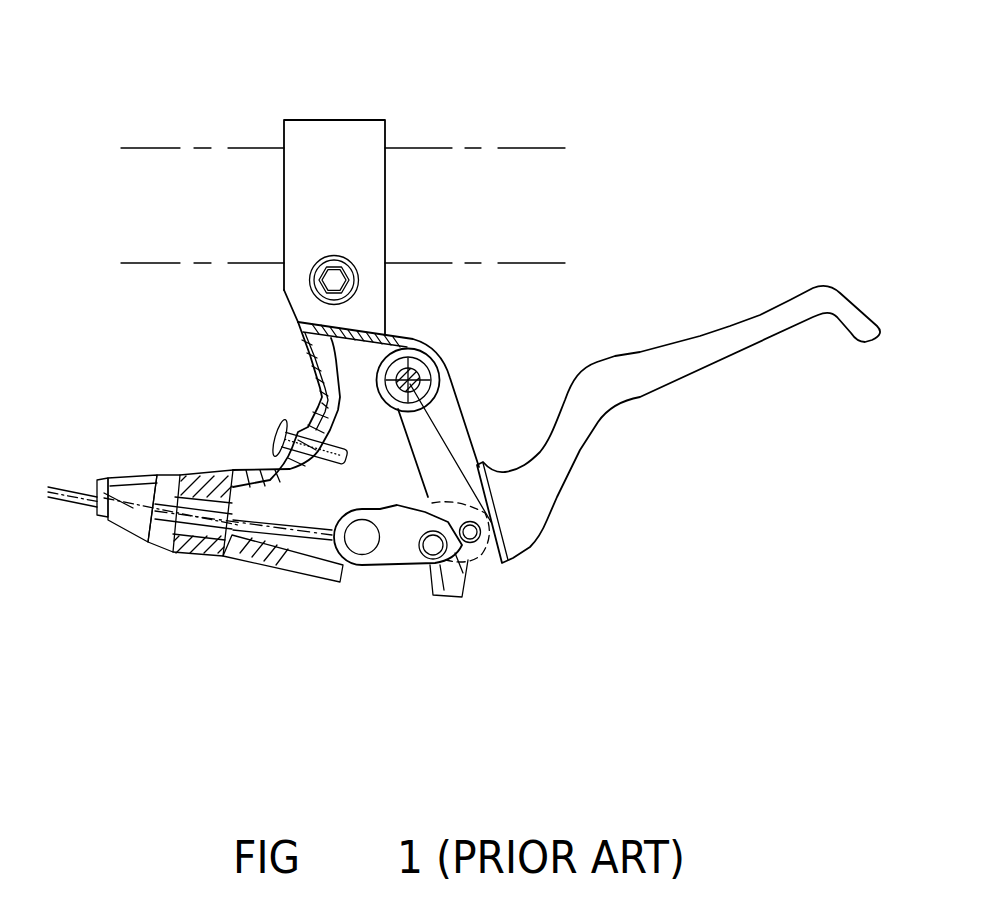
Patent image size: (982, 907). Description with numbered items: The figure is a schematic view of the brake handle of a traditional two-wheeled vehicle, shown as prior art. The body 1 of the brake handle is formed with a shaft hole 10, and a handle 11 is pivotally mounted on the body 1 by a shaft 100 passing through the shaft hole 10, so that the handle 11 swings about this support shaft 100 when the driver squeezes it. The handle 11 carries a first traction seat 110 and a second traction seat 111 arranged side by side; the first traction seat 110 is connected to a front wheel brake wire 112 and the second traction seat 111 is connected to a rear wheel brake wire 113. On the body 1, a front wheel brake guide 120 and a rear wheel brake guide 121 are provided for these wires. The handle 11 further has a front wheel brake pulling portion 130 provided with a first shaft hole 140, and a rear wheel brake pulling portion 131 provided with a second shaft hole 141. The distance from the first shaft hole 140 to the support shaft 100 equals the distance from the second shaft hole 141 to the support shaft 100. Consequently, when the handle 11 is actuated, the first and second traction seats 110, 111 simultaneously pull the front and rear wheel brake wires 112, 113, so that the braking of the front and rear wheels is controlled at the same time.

The body 1 is at (345, 167).
The shaft hole 10 is at (426, 356).
The shaft 100 is at (410, 379).
The handle 11 is at (725, 338).
The second traction seat 111 is at (417, 505).
The front wheel brake wire 112 is at (80, 490).
The rear wheel brake wire 113 is at (89, 460).
The front wheel brake guide 120 is at (245, 567).
The rear wheel brake guide 121 is at (283, 593).
The first traction seat 110 is at (378, 562).
The first shaft hole 140 is at (443, 560).
The second shaft hole 141 is at (481, 551).
The front wheel brake pulling portion 130 is at (462, 597).
The rear wheel brake pulling portion 131 is at (475, 627).